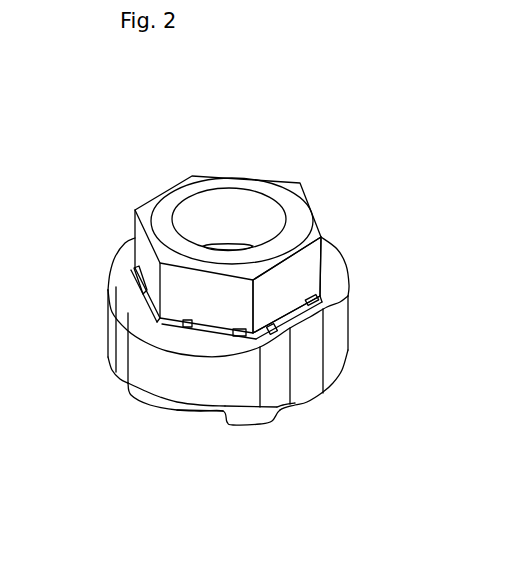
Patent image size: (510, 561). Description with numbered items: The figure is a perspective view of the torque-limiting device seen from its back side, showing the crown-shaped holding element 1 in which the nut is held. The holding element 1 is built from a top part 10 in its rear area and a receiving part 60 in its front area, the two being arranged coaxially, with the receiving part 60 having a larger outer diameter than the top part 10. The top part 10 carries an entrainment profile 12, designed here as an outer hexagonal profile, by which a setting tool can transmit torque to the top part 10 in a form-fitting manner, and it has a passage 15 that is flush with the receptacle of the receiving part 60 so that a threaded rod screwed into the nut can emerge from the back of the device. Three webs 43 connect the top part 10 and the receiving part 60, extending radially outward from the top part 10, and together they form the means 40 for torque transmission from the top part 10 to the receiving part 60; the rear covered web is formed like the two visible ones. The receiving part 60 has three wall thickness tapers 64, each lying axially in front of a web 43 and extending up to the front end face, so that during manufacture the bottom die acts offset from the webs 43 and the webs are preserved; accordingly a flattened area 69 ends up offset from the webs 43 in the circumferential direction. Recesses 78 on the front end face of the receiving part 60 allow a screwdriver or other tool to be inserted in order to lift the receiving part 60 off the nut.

The holding element 1 is at (290, 285).
The top part 10 is at (275, 193).
The entrainment profile 12 is at (295, 272).
The passage 15 is at (215, 207).
The means for torque transmission 40 is at (249, 158).
The web 43 is at (223, 226).
The wall thickness taper 64 is at (375, 405).
The receiving part 60 is at (182, 370).
The flattened area 69 is at (263, 417).
The recess 78 is at (202, 417).